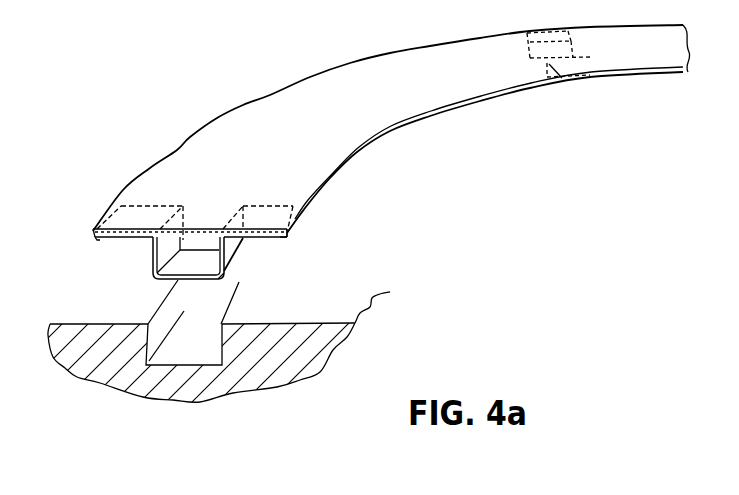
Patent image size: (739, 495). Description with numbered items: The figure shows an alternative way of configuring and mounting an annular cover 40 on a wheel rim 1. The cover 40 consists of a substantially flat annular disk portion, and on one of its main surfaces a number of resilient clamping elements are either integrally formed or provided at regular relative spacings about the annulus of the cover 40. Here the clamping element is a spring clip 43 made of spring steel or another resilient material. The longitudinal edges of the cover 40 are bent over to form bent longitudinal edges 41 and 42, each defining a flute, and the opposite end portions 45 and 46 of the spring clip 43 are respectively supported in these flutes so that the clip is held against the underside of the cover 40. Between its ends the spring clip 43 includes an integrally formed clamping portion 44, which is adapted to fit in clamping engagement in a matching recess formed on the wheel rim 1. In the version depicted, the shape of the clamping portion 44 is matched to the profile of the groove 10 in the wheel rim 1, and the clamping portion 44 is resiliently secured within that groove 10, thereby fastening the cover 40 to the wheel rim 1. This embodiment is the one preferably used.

The wheel rim 1 is at (335, 343).
The groove 10 is at (200, 347).
The cover 40 is at (423, 103).
The bent longitudinal edge 41 is at (92, 245).
The bent longitudinal edge 42 is at (288, 242).
The spring clip 43 is at (221, 281).
The clamping portion 44 is at (162, 288).
The end portion 45 is at (132, 243).
The end portion 46 is at (257, 242).